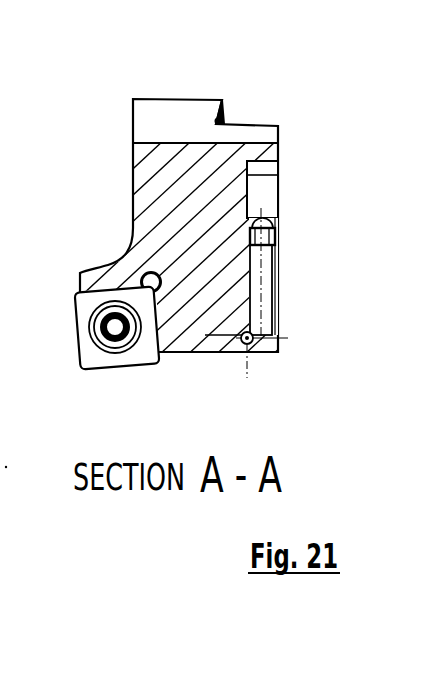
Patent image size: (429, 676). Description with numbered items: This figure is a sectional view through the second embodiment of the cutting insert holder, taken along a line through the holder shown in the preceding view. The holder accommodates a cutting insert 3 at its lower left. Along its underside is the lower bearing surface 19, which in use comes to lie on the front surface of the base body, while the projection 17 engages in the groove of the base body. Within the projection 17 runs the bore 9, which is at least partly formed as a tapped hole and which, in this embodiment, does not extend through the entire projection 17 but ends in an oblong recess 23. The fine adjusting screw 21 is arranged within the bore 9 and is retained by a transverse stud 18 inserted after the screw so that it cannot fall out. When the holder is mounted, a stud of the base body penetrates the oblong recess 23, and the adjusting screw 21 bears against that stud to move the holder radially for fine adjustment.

The cutting insert 3 is at (75, 358).
The bore 9 is at (257, 344).
The projection 17 is at (277, 127).
The transverse stud 18 is at (252, 343).
The lower bearing surface 19 is at (227, 110).
The adjusting screw 21 is at (270, 289).
The oblong recess 23 is at (280, 180).